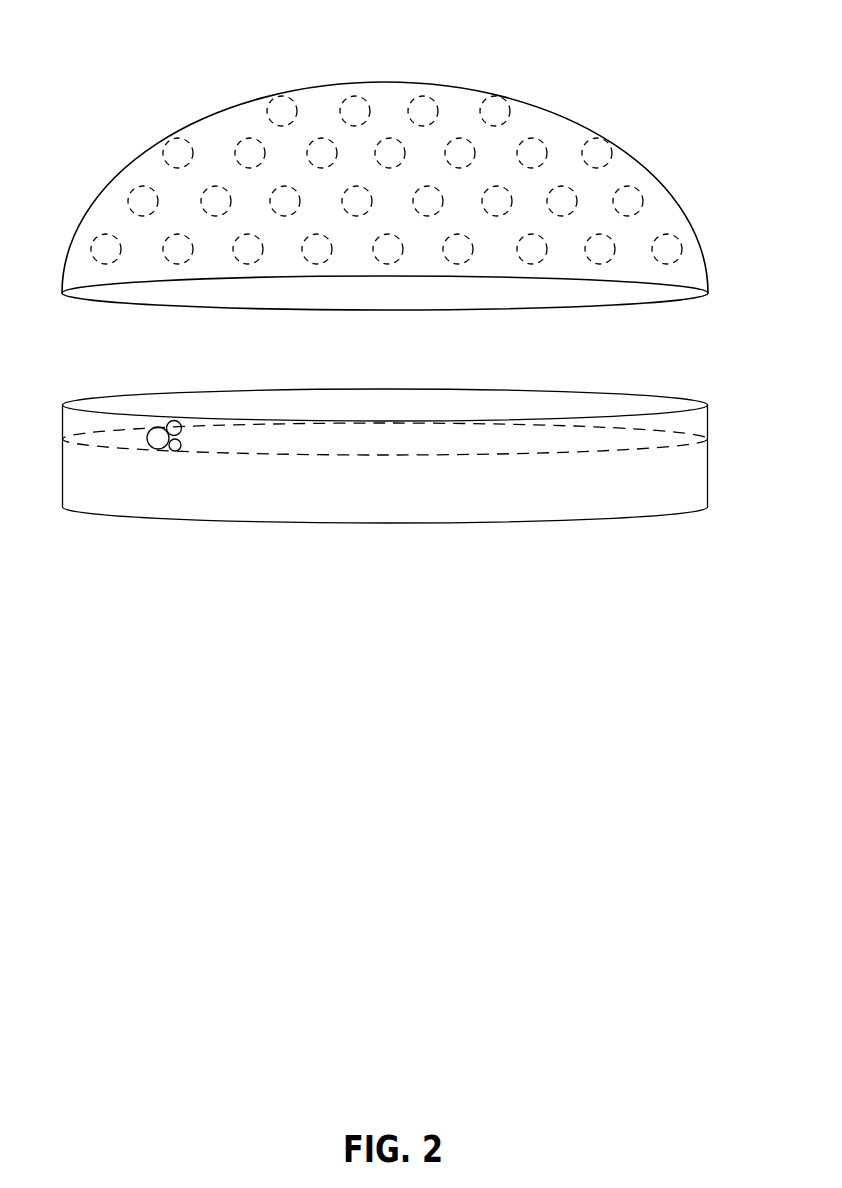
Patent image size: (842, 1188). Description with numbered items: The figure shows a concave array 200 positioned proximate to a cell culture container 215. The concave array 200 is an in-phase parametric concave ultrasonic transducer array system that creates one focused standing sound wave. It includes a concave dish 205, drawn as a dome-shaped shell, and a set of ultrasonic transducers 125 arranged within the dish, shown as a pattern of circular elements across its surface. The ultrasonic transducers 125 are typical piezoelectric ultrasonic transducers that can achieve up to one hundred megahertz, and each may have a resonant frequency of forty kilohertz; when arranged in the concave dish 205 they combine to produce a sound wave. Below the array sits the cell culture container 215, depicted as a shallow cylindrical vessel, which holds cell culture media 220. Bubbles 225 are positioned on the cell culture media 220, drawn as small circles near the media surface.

The concave array 200 is at (411, 308).
The concave dish 205 is at (385, 82).
The ultrasonic transducers 125 is at (683, 247).
The cell culture container 215 is at (365, 389).
The cell culture media 220 is at (385, 474).
The bubbles 225 is at (149, 443).